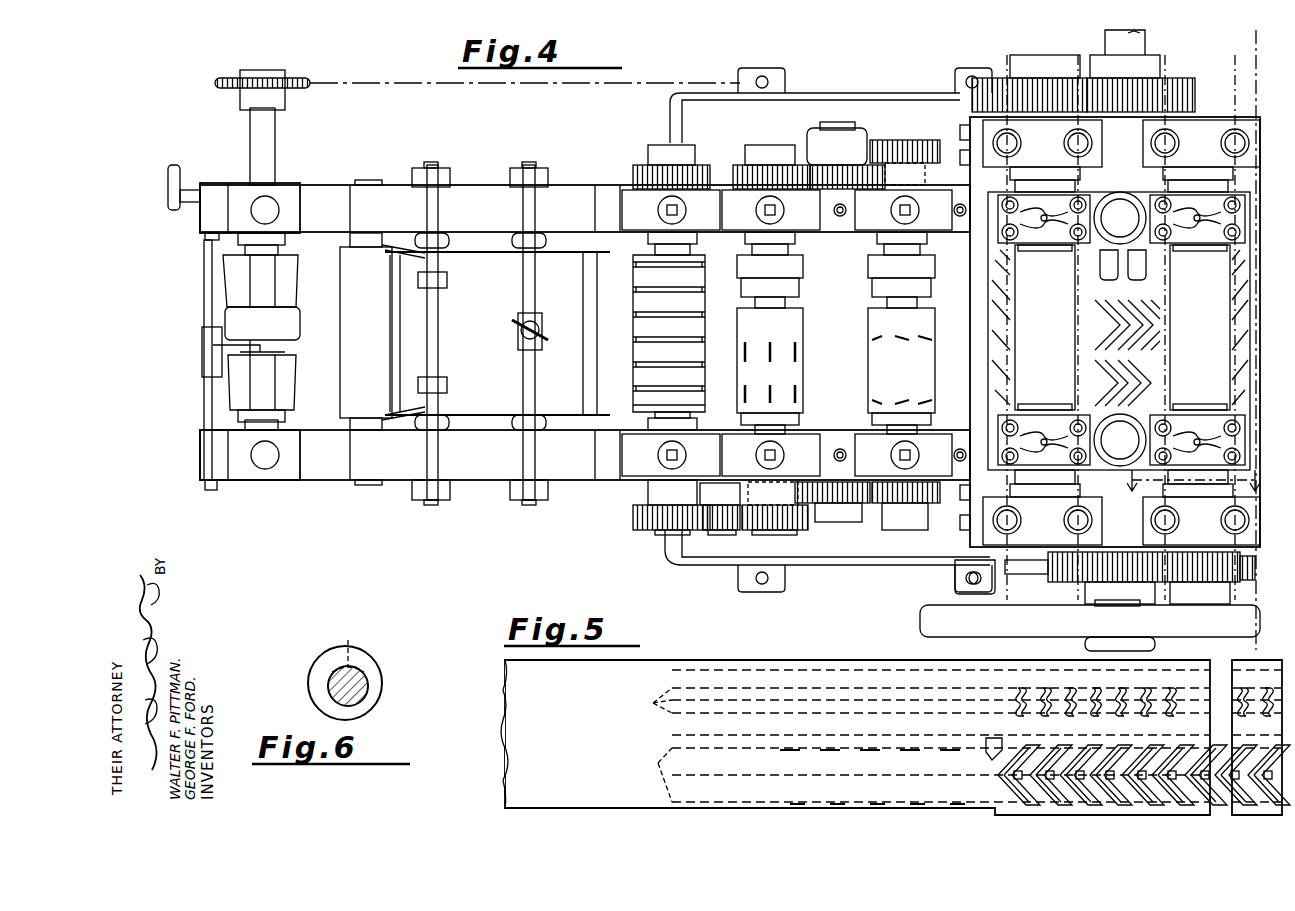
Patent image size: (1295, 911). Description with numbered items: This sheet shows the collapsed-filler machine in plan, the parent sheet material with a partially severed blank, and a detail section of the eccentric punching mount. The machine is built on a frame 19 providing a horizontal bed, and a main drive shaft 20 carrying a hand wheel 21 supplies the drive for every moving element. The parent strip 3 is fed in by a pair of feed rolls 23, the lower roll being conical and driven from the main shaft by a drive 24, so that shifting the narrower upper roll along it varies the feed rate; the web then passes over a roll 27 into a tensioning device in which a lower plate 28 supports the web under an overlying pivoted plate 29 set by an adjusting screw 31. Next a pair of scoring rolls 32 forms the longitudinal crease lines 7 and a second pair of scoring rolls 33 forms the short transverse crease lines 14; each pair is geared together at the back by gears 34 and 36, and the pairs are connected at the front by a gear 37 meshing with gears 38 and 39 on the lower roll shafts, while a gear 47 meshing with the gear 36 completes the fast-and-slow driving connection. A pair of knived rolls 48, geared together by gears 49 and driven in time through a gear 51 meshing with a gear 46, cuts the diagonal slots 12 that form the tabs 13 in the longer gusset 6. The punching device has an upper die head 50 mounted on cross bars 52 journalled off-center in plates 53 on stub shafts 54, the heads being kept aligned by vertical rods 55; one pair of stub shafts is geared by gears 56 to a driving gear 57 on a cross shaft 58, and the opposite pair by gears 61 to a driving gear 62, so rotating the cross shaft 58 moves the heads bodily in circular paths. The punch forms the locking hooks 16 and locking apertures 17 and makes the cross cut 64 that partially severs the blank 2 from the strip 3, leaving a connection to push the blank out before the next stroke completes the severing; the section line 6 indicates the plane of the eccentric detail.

In FIG. 5, the creased blank 2 is at (1250, 726).
In FIG. 5, the parent strip 3 is at (560, 708).
In FIG. 4, the longer gusset 6 is at (1193, 480).
In FIG. 5, the crease lines 7 is at (956, 736).
In FIG. 5, the diagonal slots 12 is at (1180, 755).
In FIG. 5, the tabs 13 is at (1010, 755).
In FIG. 5, the crease lines 14 is at (778, 750).
In FIG. 5, the locking hooks 16 is at (1196, 702).
In FIG. 5, the locking apertures 17 is at (1015, 775).
In FIG. 4, the frame 19 is at (320, 468).
In FIG. 4, the main drive shaft 20 is at (1138, 40).
In FIG. 4, the hand wheel 21 is at (945, 622).
In FIG. 4, the feed rolls 23 is at (285, 315).
In FIG. 4, the drive 24 is at (430, 84).
In FIG. 4, the roll 27 is at (358, 370).
In FIG. 4, the lower plate 28 is at (590, 298).
In FIG. 4, the pivoted plate 29 is at (570, 272).
In FIG. 4, the adjusting screw 31 is at (518, 330).
In FIG. 4, the scoring rolls 32 is at (650, 355).
In FIG. 4, the scoring rolls 33 is at (752, 371).
In FIG. 4, the gear 34 is at (640, 176).
In FIG. 4, the gear 36 is at (738, 168).
In FIG. 4, the gear 37 is at (724, 530).
In FIG. 4, the gear 38 is at (636, 519).
In FIG. 4, the gear 39 is at (792, 530).
In FIG. 4, the gear 46 is at (932, 512).
In FIG. 4, the gear 47 is at (822, 165).
In FIG. 4, the knived rolls 48 is at (880, 360).
In FIG. 4, the gears 49 is at (892, 140).
In FIG. 4, the upper die carrying head 50 is at (1235, 322).
In FIG. 4, the gear 51 is at (847, 510).
In FIG. 4, the cross bars 52 is at (1200, 303).
In FIG. 6, the cross bars 52 is at (360, 690).
In FIG. 4, the plates 53 is at (1062, 488).
In FIG. 6, the plates 53 is at (368, 663).
In FIG. 4, the stub shafts 54 is at (1150, 533).
In FIG. 6, the stub shafts 54 is at (342, 646).
In FIG. 4, the vertical rods 55 is at (1120, 212).
In FIG. 4, the gears 56 is at (1000, 82).
In FIG. 4, the driving gear 57 is at (1190, 90).
In FIG. 4, the cross shaft 58 is at (1130, 605).
In FIG. 4, the gears 61 is at (1250, 575).
In FIG. 4, the driving gear 62 is at (1068, 582).
In FIG. 5, the cross cut 64 is at (995, 740).